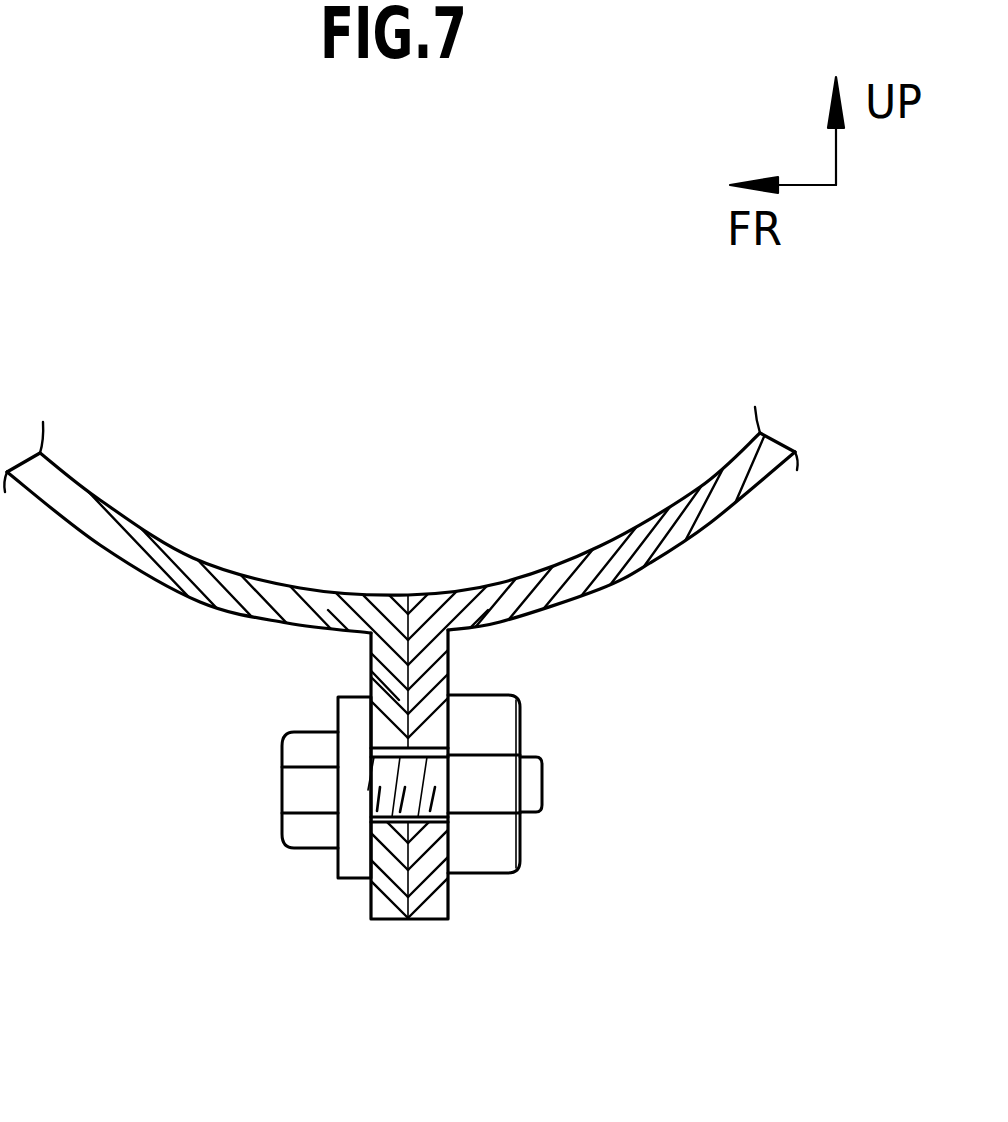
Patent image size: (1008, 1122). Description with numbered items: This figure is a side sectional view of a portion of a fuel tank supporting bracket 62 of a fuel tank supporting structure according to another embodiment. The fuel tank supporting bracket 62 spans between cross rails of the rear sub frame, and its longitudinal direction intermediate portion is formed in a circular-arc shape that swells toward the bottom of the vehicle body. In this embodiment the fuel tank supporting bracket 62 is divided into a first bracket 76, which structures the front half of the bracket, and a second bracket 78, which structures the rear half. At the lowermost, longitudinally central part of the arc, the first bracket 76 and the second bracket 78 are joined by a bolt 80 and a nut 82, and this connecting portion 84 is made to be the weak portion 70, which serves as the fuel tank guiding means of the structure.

The fuel tank supporting bracket 62 is at (653, 477).
The weak portion 70 is at (407, 582).
The first bracket 76 is at (160, 587).
The second bracket 78 is at (647, 570).
The bolt 80 is at (308, 842).
The nut 82 is at (510, 848).
The connecting portion 84 is at (353, 927).